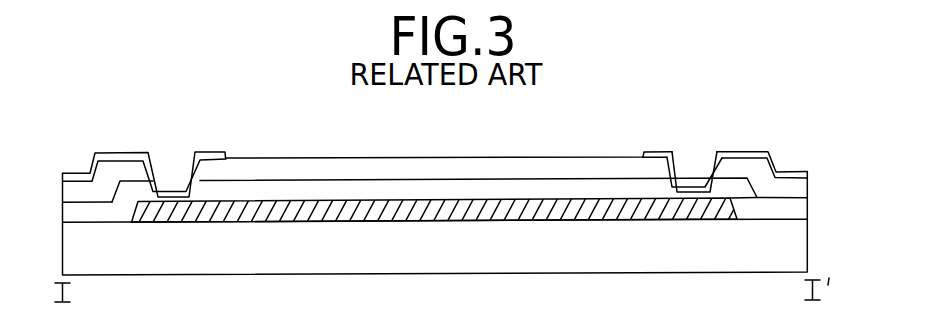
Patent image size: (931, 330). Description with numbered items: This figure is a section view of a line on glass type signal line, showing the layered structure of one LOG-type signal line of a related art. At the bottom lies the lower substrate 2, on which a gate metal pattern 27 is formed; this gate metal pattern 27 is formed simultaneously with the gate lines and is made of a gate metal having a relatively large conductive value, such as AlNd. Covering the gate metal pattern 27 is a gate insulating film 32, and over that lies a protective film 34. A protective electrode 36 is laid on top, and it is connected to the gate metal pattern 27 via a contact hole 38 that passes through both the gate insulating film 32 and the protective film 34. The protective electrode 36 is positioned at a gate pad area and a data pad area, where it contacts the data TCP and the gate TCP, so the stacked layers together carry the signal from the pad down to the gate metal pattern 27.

The lower substrate 2 is at (803, 254).
The gate metal pattern 27 is at (459, 210).
The gate insulating film 32 is at (802, 212).
The protective film 34 is at (797, 185).
The protective electrode 36 is at (807, 171).
The contact hole 38 is at (694, 158).